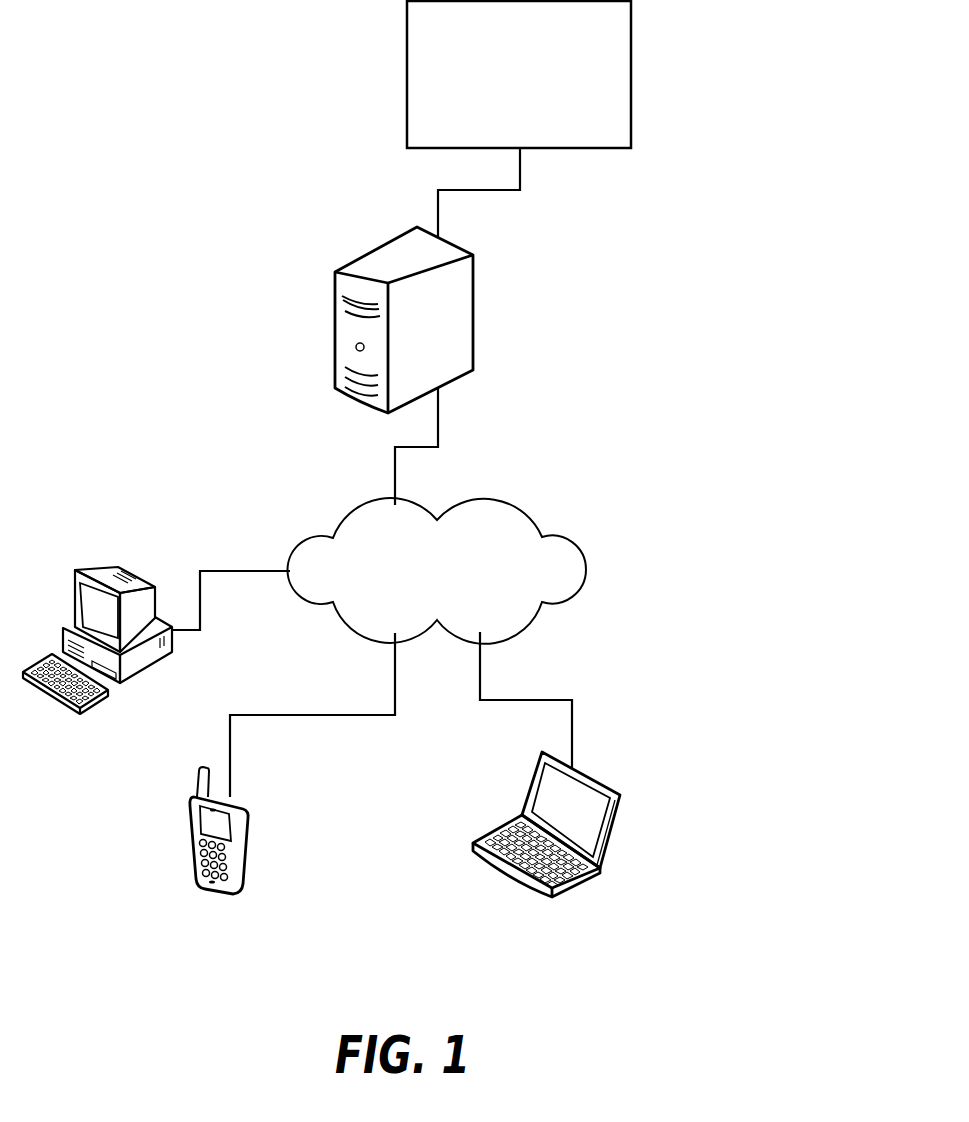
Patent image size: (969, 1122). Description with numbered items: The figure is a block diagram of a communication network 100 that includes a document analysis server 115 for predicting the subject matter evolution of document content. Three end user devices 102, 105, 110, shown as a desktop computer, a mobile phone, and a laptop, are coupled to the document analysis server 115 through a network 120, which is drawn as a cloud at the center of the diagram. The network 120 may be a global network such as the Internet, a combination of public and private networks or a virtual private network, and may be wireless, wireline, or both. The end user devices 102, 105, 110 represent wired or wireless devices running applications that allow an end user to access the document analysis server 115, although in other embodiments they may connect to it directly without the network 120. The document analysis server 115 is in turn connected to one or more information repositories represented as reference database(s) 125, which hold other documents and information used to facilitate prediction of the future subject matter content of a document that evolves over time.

The system 100 is at (146, 121).
The end user device 102 is at (92, 562).
The end user device 105 is at (248, 880).
The end user device 110 is at (612, 785).
The document analysis server 115 is at (472, 280).
The network 120 is at (437, 571).
The reference database(s) 125 is at (519, 74).